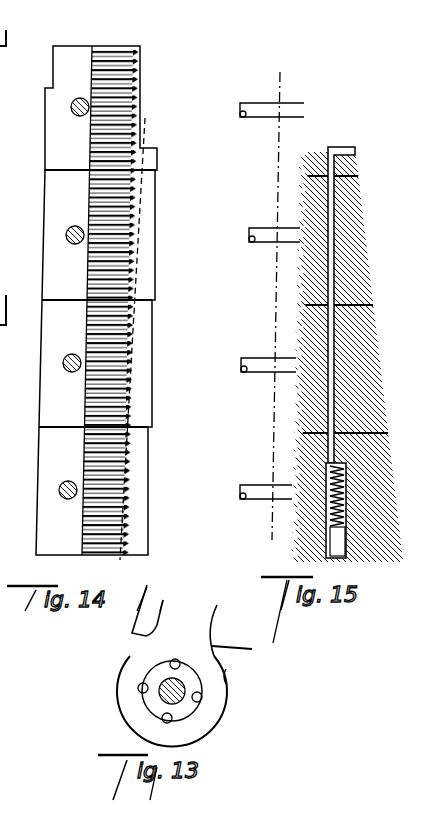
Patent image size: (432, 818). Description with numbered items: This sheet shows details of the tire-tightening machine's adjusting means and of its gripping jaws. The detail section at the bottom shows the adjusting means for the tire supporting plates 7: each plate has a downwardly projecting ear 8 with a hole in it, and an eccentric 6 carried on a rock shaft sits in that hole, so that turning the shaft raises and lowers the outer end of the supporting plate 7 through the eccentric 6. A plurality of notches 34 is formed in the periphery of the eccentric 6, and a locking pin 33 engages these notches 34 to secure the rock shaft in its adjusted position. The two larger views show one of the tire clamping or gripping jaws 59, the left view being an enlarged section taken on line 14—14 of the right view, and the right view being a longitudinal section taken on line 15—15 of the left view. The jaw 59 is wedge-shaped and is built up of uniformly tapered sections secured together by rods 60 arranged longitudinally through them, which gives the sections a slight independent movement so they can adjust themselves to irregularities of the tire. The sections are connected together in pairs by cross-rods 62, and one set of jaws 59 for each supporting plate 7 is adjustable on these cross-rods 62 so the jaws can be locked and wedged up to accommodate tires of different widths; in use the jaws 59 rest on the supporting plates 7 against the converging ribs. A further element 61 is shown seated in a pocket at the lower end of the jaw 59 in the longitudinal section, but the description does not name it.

In FIG. 14, the tire clamping jaws 59 is at (134, 243).
In FIG. 15, the tire clamping jaws 59 is at (366, 238).
In FIG. 15, the rods 60 is at (336, 278).
In FIG. 15, the spring 61 is at (346, 474).
In FIG. 14, the cross-rods 62 is at (63, 362).
In FIG. 15, the cross-rods 62 is at (269, 362).
In FIG. 15, the section line 14— 14 is at (243, 72).
In FIG. 14, the section line 15— 15 is at (174, 117).
In FIG. 13, the eccentrics 6 is at (190, 708).
In FIG. 13, the tire supporting plates 7 is at (192, 620).
In FIG. 13, the ears 8 is at (231, 678).
In FIG. 13, the locking pins 33 is at (177, 661).
In FIG. 13, the notches 34 is at (139, 688).